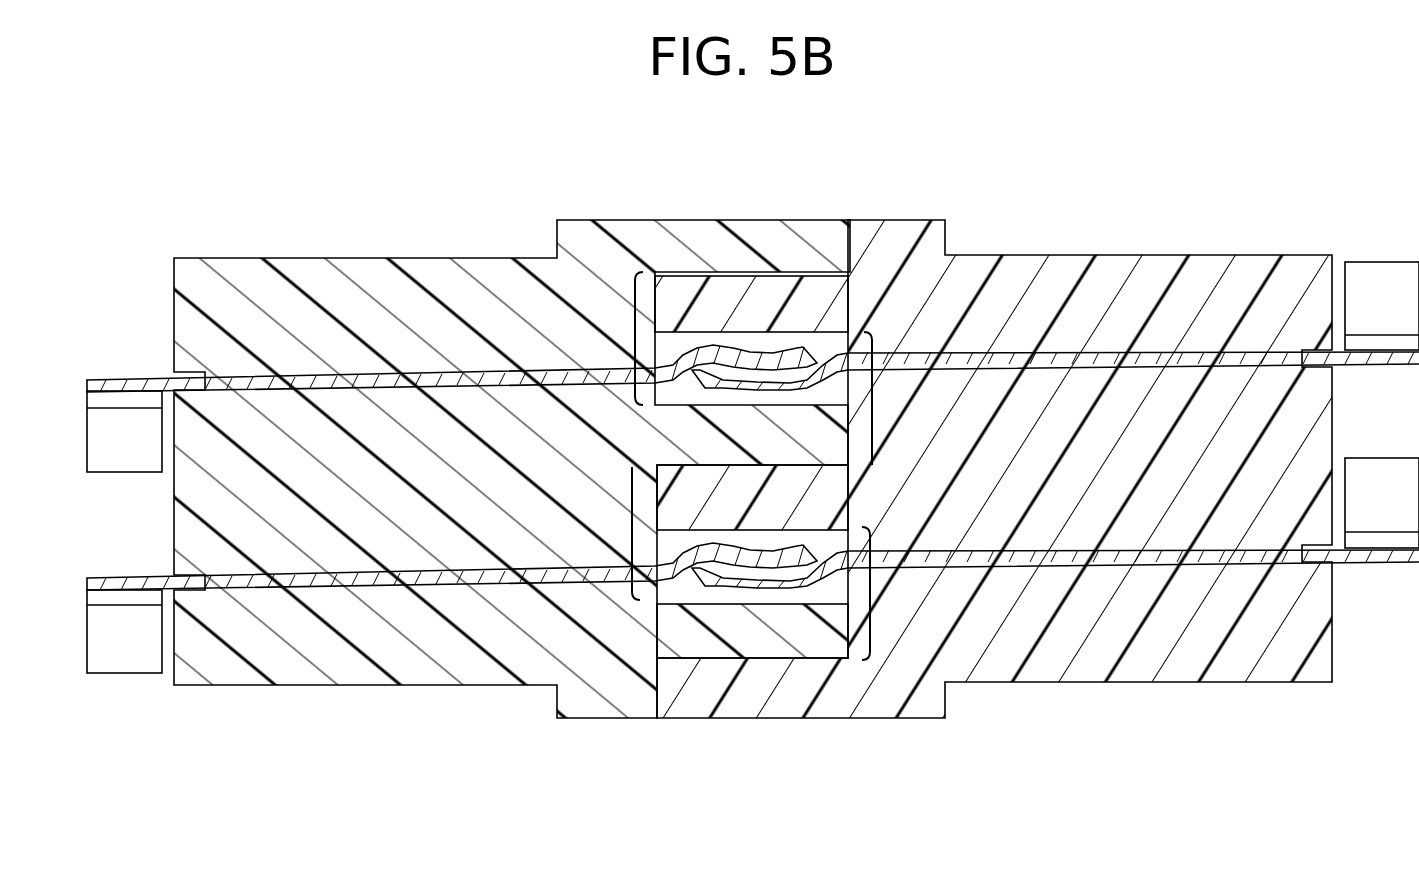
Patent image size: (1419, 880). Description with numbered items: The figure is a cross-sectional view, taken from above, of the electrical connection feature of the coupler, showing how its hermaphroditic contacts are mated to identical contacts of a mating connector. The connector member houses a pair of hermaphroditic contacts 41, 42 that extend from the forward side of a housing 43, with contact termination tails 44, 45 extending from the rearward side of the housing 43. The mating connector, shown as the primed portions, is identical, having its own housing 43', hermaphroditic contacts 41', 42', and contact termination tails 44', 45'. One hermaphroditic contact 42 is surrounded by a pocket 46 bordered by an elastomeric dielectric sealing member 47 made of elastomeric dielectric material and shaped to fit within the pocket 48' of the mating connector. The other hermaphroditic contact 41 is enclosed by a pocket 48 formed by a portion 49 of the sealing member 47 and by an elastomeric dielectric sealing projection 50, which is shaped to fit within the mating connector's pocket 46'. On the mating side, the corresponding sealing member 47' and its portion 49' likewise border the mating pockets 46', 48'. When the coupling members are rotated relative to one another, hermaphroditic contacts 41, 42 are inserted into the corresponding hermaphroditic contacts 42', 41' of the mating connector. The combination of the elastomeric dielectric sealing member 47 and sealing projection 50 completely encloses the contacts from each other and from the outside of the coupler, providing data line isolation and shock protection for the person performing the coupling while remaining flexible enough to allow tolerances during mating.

The hermaphroditic contact 41 is at (455, 342).
The hermaphroditic contact of mating connector 41' is at (1055, 601).
The hermaphroditic contact 42 is at (452, 532).
The hermaphroditic contact of mating connector 42' is at (1050, 401).
The housing 43 is at (512, 456).
The housing of mating connector 43' is at (994, 454).
The contact termination tail 44 is at (124, 388).
The contact termination tail of mating connector 44' is at (1382, 538).
The contact termination tail 45 is at (124, 666).
The contact termination tail of mating connector 45' is at (1382, 276).
The pocket 46 is at (589, 533).
The pocket of mating connector 46' is at (916, 377).
The elastomeric dielectric sealing member 47 is at (752, 654).
The elastomeric dielectric sealing member of mating connector 47' is at (751, 278).
The pocket 48 is at (580, 338).
The pocket of mating connector 48' is at (900, 593).
The portion of sealing member 49 is at (752, 491).
The portion of sealing member of mating connector 49' is at (751, 437).
The elastomeric dielectric sealing projection 50 is at (765, 235).